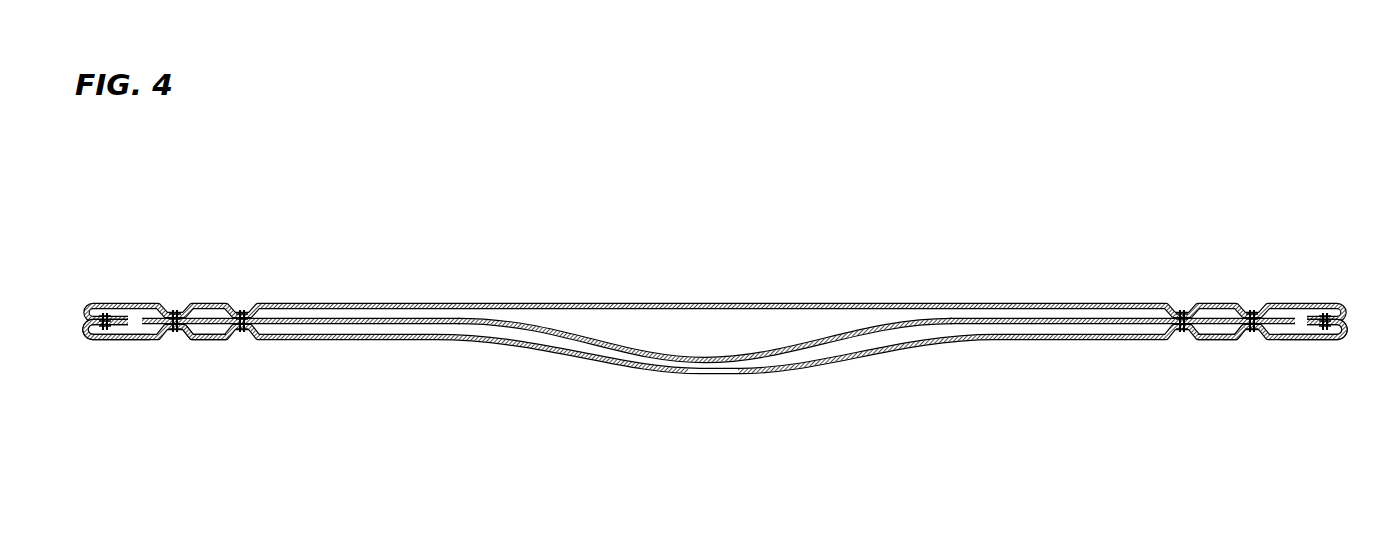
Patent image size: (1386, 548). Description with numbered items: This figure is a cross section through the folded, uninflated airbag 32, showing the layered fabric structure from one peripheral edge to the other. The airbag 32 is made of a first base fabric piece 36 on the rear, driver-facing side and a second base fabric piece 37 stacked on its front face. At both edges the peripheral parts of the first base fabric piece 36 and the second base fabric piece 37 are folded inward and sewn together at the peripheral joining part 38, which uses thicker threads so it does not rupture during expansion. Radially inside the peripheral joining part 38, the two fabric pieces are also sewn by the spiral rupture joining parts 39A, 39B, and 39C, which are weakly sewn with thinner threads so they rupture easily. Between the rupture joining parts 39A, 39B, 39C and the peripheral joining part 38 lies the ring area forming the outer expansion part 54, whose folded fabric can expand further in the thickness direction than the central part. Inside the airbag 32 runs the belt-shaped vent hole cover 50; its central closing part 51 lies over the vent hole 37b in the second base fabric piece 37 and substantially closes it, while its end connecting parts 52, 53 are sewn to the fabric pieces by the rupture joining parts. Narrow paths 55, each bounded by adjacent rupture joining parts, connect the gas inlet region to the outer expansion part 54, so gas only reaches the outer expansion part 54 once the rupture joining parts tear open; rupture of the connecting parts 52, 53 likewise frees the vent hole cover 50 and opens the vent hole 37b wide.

The airbag 32 is at (803, 256).
The first base fabric piece 36 is at (535, 303).
The second base fabric piece 37 is at (440, 340).
The vent hole 37b is at (698, 376).
The peripheral joining part 38 is at (100, 339).
The rupture joining part 39A is at (1251, 309).
The rupture joining part 39B is at (175, 309).
The rupture joining part 39C is at (242, 310).
The vent hole cover 50 is at (963, 313).
The closing part 51 is at (668, 356).
The connecting part 52 is at (1268, 326).
The connecting part 53 is at (162, 326).
The outer expansion part 54 is at (133, 341).
The path 55 is at (206, 342).